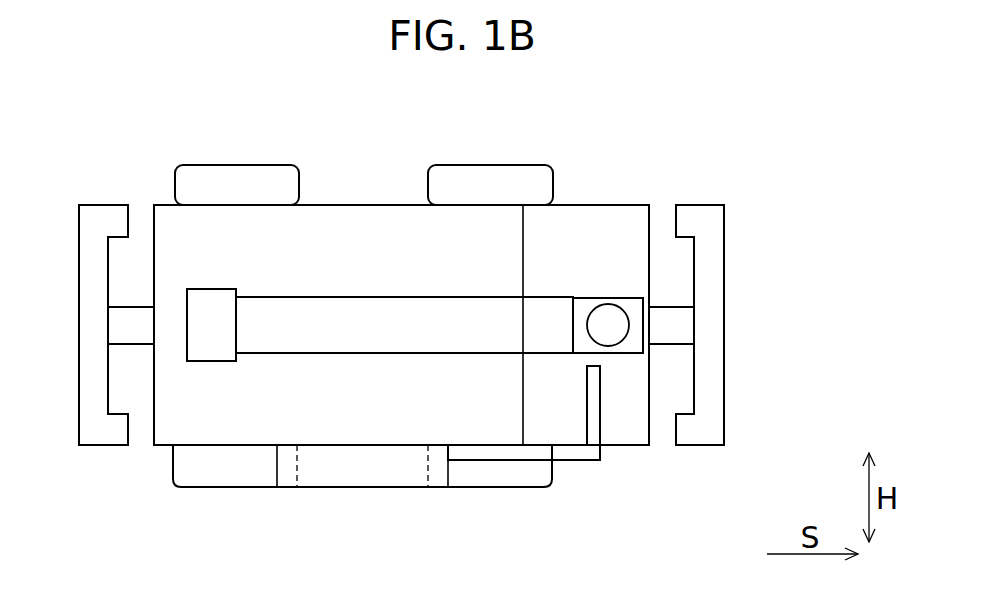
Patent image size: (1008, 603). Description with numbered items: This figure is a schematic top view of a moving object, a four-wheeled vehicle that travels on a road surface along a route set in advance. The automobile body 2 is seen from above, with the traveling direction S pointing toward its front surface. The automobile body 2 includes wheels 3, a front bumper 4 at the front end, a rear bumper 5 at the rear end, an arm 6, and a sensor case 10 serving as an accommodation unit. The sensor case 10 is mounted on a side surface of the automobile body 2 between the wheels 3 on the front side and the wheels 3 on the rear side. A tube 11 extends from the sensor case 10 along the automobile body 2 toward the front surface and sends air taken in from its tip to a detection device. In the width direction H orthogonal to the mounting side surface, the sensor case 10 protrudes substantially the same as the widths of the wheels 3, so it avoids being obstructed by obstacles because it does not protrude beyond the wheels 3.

The automobile body 2 is at (355, 205).
The wheels 3 is at (232, 478).
The front bumper 4 is at (716, 324).
The rear bumper 5 is at (90, 323).
The arm 6 is at (392, 310).
The sensor case 10 is at (362, 480).
The tube 11 is at (582, 455).